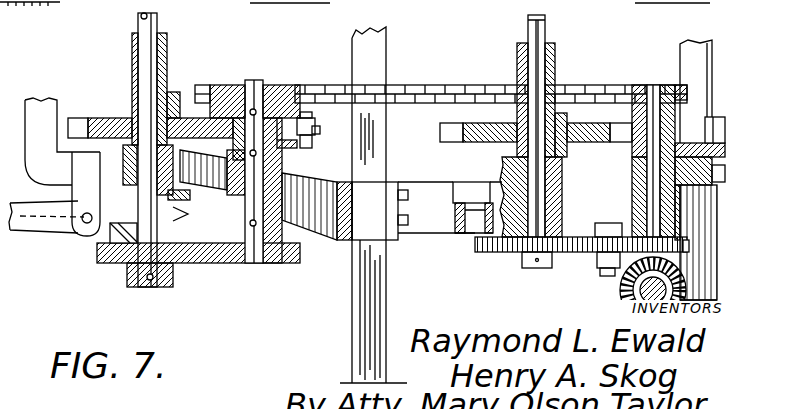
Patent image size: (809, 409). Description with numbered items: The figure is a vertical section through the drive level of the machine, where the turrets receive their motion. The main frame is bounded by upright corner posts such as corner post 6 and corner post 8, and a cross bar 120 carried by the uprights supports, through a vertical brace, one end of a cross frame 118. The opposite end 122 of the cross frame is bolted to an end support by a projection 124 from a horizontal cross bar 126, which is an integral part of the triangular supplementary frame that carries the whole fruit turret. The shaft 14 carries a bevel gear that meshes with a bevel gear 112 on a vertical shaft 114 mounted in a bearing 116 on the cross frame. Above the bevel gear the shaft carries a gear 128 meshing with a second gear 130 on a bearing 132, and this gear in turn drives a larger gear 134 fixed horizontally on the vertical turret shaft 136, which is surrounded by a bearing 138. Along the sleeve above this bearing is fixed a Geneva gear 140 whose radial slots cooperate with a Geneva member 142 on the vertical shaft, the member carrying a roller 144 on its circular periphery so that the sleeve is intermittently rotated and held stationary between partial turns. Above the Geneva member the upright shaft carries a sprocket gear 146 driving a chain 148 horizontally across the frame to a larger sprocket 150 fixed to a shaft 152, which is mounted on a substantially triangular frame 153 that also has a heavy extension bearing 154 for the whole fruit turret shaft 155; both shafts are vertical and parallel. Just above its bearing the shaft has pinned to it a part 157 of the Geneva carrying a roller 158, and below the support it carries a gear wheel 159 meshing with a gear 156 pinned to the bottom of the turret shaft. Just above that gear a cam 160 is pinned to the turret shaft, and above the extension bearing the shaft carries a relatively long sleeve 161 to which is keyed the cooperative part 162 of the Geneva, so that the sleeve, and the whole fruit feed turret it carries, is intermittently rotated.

The corner post 6 is at (388, 293).
The corner post 8 is at (710, 279).
The shaft 14 is at (706, 294).
The bevel gear 112 is at (622, 266).
The vertical shaft 114 is at (652, 86).
The bearing 116 is at (633, 193).
The cross frame 118 is at (561, 216).
The cross bar 120 is at (697, 190).
The end of cross frame 122 is at (437, 222).
The projection 124 is at (395, 184).
The horizontal cross bar 126 is at (347, 242).
The gear 128 is at (688, 245).
The second gear 130 is at (606, 272).
The bearing 132 is at (576, 254).
The larger gear 134 is at (491, 254).
The turret shaft 136 is at (527, 33).
The bearing 138 is at (503, 168).
The Geneva gear 140 is at (468, 125).
The Geneva member 142 is at (688, 132).
The roller 144 is at (720, 128).
The sprocket gear 146 is at (672, 86).
The chain 148 is at (590, 86).
The larger sprocket 150 is at (270, 84).
The shaft 152 is at (253, 80).
The triangular frame 153 is at (325, 188).
The extension bearing 154 is at (192, 160).
The whole fruit turret shaft 155 is at (155, 20).
The gear 156 is at (118, 264).
The Geneva part 157 is at (282, 128).
The roller 158 is at (320, 130).
The gear wheel 159 is at (218, 250).
The cam 160 is at (112, 236).
The sleeve 161 is at (133, 47).
The Geneva part 162 is at (108, 118).